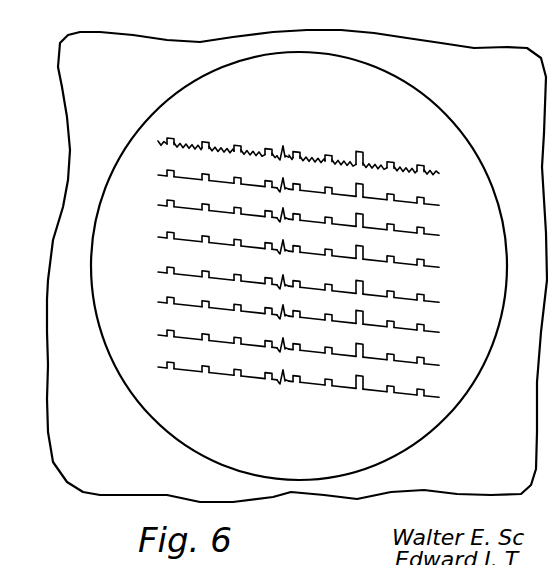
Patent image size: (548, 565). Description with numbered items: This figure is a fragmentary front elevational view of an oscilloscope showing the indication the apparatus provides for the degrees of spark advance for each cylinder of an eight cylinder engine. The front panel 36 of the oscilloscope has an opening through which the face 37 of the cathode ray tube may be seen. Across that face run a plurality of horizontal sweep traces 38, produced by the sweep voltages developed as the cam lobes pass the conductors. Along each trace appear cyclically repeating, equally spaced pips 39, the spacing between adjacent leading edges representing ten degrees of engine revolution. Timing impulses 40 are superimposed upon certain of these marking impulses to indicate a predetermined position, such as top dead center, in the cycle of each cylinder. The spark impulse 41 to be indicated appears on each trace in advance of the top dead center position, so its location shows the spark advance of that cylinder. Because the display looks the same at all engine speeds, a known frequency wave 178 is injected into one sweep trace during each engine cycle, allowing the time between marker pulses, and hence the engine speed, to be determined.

The front panel 36 is at (60, 257).
The face of the cathode ray tube 37 is at (96, 219).
The horizontal sweep traces 38 is at (248, 247).
The pips 39 is at (236, 144).
The timing impulses 40 is at (363, 151).
The spark impulse 41 is at (281, 147).
The known frequency wave 178 is at (313, 156).